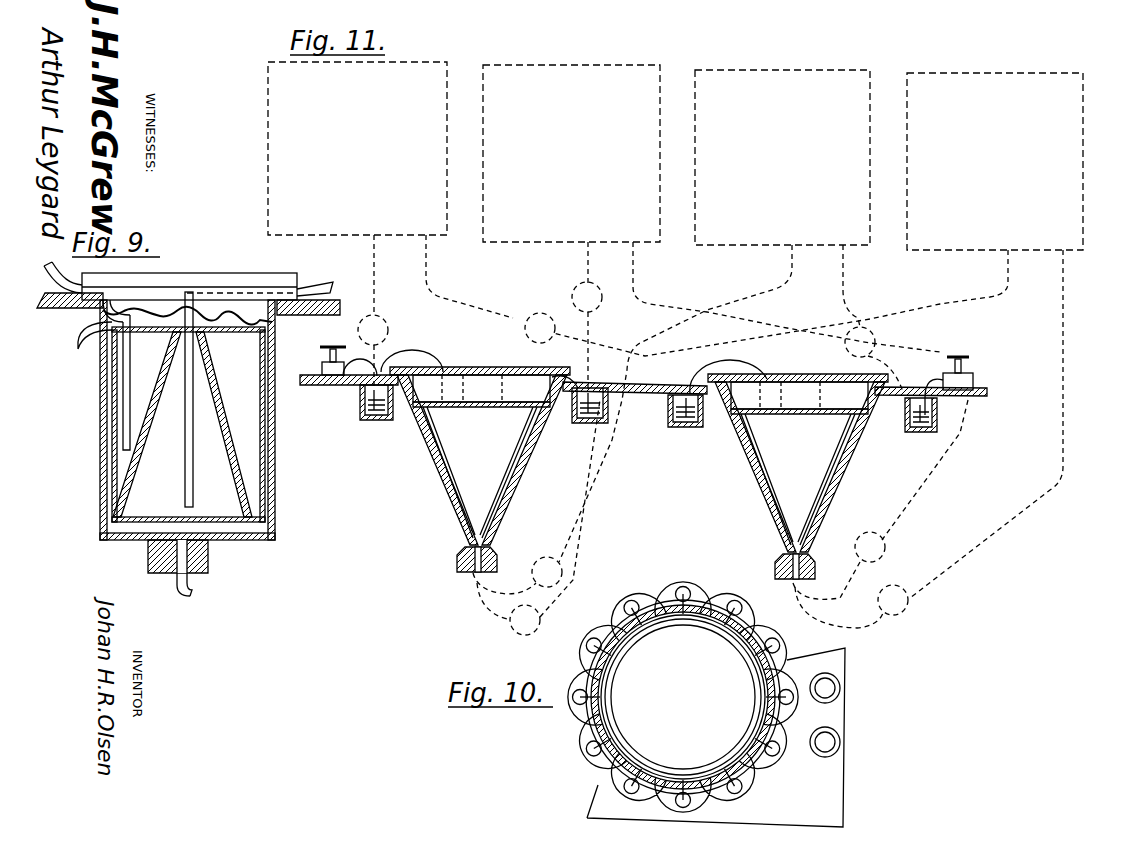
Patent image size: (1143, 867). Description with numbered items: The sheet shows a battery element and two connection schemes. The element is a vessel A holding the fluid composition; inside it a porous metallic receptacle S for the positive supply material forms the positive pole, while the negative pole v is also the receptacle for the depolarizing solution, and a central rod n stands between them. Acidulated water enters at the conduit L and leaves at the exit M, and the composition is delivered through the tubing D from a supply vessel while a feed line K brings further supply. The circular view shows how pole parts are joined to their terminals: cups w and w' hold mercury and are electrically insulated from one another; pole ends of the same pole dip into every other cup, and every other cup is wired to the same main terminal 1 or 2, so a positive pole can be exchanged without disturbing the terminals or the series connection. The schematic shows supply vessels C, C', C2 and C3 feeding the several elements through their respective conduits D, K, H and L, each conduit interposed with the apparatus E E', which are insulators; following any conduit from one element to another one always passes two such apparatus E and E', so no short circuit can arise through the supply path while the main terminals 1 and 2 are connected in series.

In FIG. 9, the conduit K is at (47, 283).
In FIG. 11, the conduit K is at (378, 270).
In FIG. 9, the tubing D is at (207, 282).
In FIG. 11, the tubing D is at (1072, 352).
In FIG. 9, the exit M is at (83, 375).
In FIG. 9, the central rod n is at (193, 322).
In FIG. 9, the negative pole v is at (112, 418).
In FIG. 9, the vessel A is at (273, 463).
In FIG. 9, the porous metallic receptacle S is at (230, 523).
In FIG. 9, the conduit L is at (177, 599).
In FIG. 11, the conduit L is at (770, 284).
In FIG. 11, the supply-vessel C' is at (345, 148).
In FIG. 11, the supply-vessel C2 is at (559, 153).
In FIG. 11, the supply-vessel C3 is at (770, 157).
In FIG. 11, the supply apparatus C is at (1003, 161).
In FIG. 11, the conduit H is at (587, 264).
In FIG. 11, the interposed vessel E is at (647, 440).
In FIG. 11, the interposed vessel E' is at (653, 480).
In FIG. 11, the cup w is at (518, 416).
In FIG. 10, the cup w is at (687, 692).
In FIG. 11, the cup w' is at (753, 422).
In FIG. 10, the cup w' is at (690, 691).
In FIG. 11, the main terminal 1 is at (328, 362).
In FIG. 10, the main terminal 1 is at (840, 685).
In FIG. 11, the main terminal 2 is at (966, 381).
In FIG. 10, the main terminal 2 is at (840, 742).